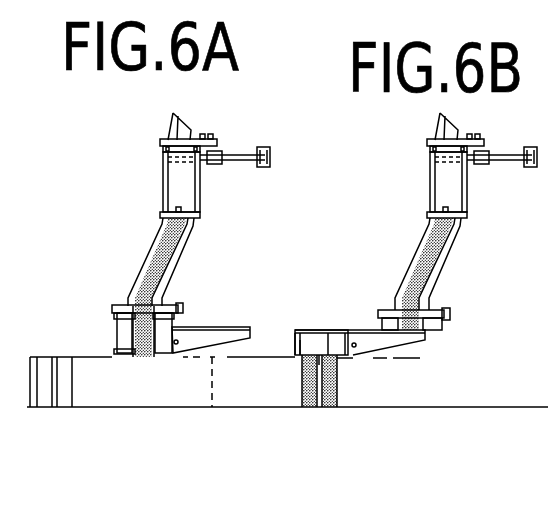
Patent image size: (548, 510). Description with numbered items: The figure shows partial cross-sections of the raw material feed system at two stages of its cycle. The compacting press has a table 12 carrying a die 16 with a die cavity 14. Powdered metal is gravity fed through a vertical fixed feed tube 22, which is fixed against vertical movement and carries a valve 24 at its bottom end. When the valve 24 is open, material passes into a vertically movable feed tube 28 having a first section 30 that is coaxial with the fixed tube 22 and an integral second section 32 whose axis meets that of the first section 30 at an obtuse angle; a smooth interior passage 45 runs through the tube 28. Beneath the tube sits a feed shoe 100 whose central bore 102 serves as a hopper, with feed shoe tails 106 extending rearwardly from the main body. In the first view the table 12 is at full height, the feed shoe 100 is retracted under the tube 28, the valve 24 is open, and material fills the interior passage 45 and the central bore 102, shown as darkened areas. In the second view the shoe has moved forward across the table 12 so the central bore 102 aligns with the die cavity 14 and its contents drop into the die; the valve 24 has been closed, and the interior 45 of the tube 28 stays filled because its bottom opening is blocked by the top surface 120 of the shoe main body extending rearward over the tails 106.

In FIG. 6A, the table 12 is at (212, 407).
In FIG. 6A, the die cavity 14 is at (63, 393).
In FIG. 6A, the die 16 is at (43, 410).
In FIG. 6A, the vertical fixed feed tube 22 is at (180, 190).
In FIG. 6B, the vertical fixed feed tube 22 is at (447, 190).
In FIG. 6A, the valve 24 is at (192, 218).
In FIG. 6B, the valve 24 is at (462, 218).
In FIG. 6A, the vertically movable feed tube 28 is at (148, 246).
In FIG. 6B, the vertically movable feed tube 28 is at (408, 272).
In FIG. 6A, the first section 30 is at (163, 200).
In FIG. 6B, the first section 30 is at (428, 202).
In FIG. 6A, the second section 32 is at (184, 268).
In FIG. 6B, the second section 32 is at (442, 282).
In FIG. 6A, the interior passage 45 is at (152, 285).
In FIG. 6B, the interior passage 45 is at (440, 258).
In FIG. 6A, the feed shoe 100 is at (118, 347).
In FIG. 6B, the feed shoe 100 is at (295, 340).
In FIG. 6A, the central bore 102 is at (140, 357).
In FIG. 6B, the central bore 102 is at (320, 347).
In FIG. 6A, the feed shoe tails 106 is at (220, 337).
In FIG. 6A, the top surface 120 is at (207, 325).
In FIG. 6B, the top surface 120 is at (372, 331).